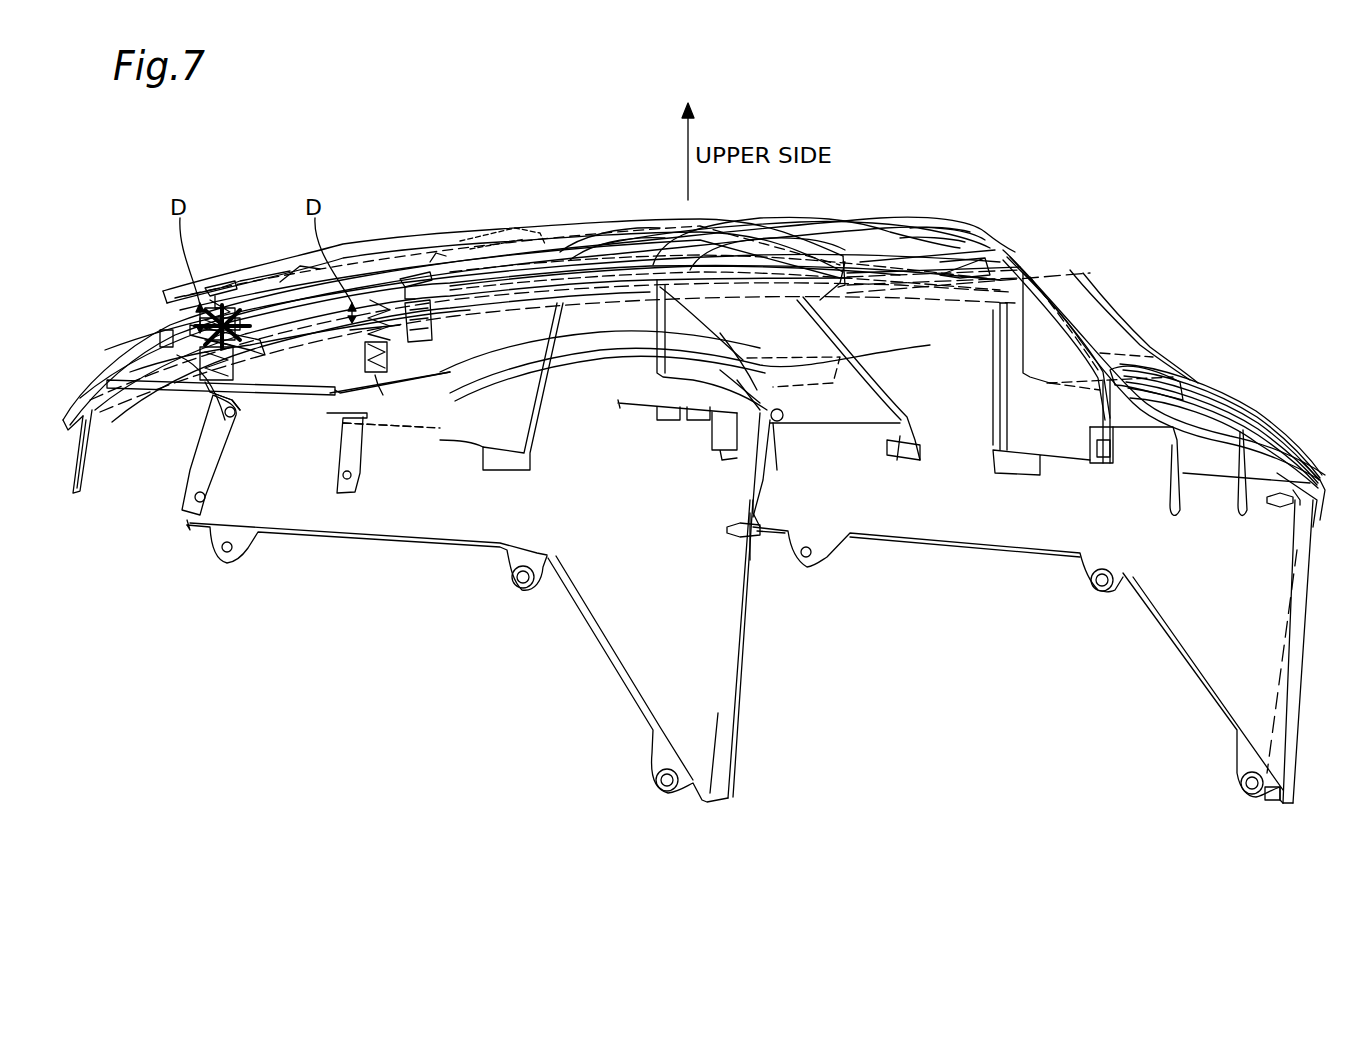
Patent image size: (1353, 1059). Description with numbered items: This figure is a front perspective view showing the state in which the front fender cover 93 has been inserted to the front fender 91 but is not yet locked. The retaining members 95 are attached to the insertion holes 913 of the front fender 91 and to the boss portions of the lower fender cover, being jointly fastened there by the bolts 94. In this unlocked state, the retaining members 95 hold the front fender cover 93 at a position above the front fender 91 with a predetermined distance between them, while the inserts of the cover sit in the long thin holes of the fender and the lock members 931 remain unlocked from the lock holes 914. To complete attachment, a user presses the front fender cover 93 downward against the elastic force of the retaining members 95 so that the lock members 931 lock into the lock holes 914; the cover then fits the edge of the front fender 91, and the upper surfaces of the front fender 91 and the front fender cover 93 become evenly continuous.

The front fender 91 is at (1076, 233).
The front fender cover 93 is at (344, 248).
The lock member 931 is at (230, 284).
The insertion hole 913 is at (180, 363).
The bolt 94 is at (200, 393).
The retaining member 95 is at (263, 328).
The lock hole 914 is at (437, 370).